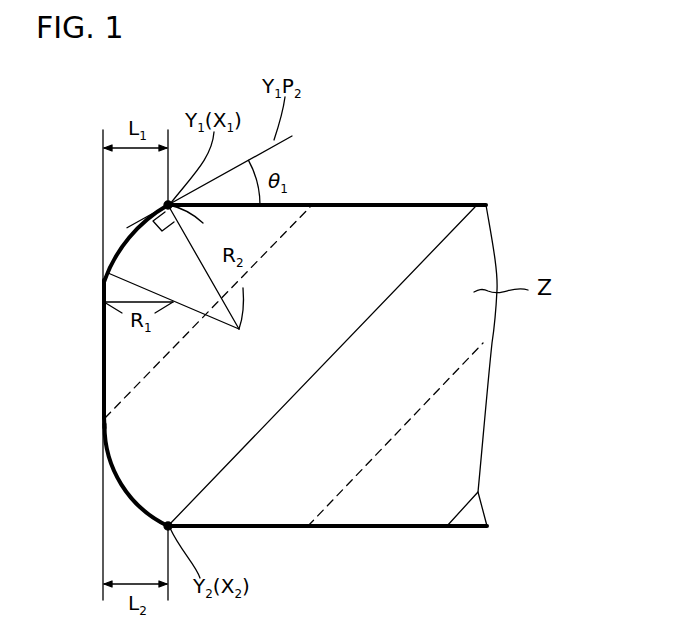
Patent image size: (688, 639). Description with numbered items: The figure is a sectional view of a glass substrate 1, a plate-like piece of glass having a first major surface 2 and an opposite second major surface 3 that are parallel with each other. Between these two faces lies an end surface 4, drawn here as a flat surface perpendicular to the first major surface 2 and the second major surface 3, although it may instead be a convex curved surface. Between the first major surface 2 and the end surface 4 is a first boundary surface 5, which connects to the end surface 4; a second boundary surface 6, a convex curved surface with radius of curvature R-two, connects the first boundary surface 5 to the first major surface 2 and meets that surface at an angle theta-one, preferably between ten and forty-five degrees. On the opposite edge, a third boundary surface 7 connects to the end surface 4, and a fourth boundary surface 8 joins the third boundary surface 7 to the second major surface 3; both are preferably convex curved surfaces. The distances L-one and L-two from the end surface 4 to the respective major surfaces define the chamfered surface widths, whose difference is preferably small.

The glass substrate 1 is at (446, 132).
The first major surface 2 is at (366, 204).
The second major surface 3 is at (395, 528).
The end surface 4 is at (104, 366).
The first boundary surface 5 is at (104, 284).
The second boundary surface 6 is at (126, 240).
The third boundary surface 7 is at (104, 447).
The fourth boundary surface 8 is at (122, 488).